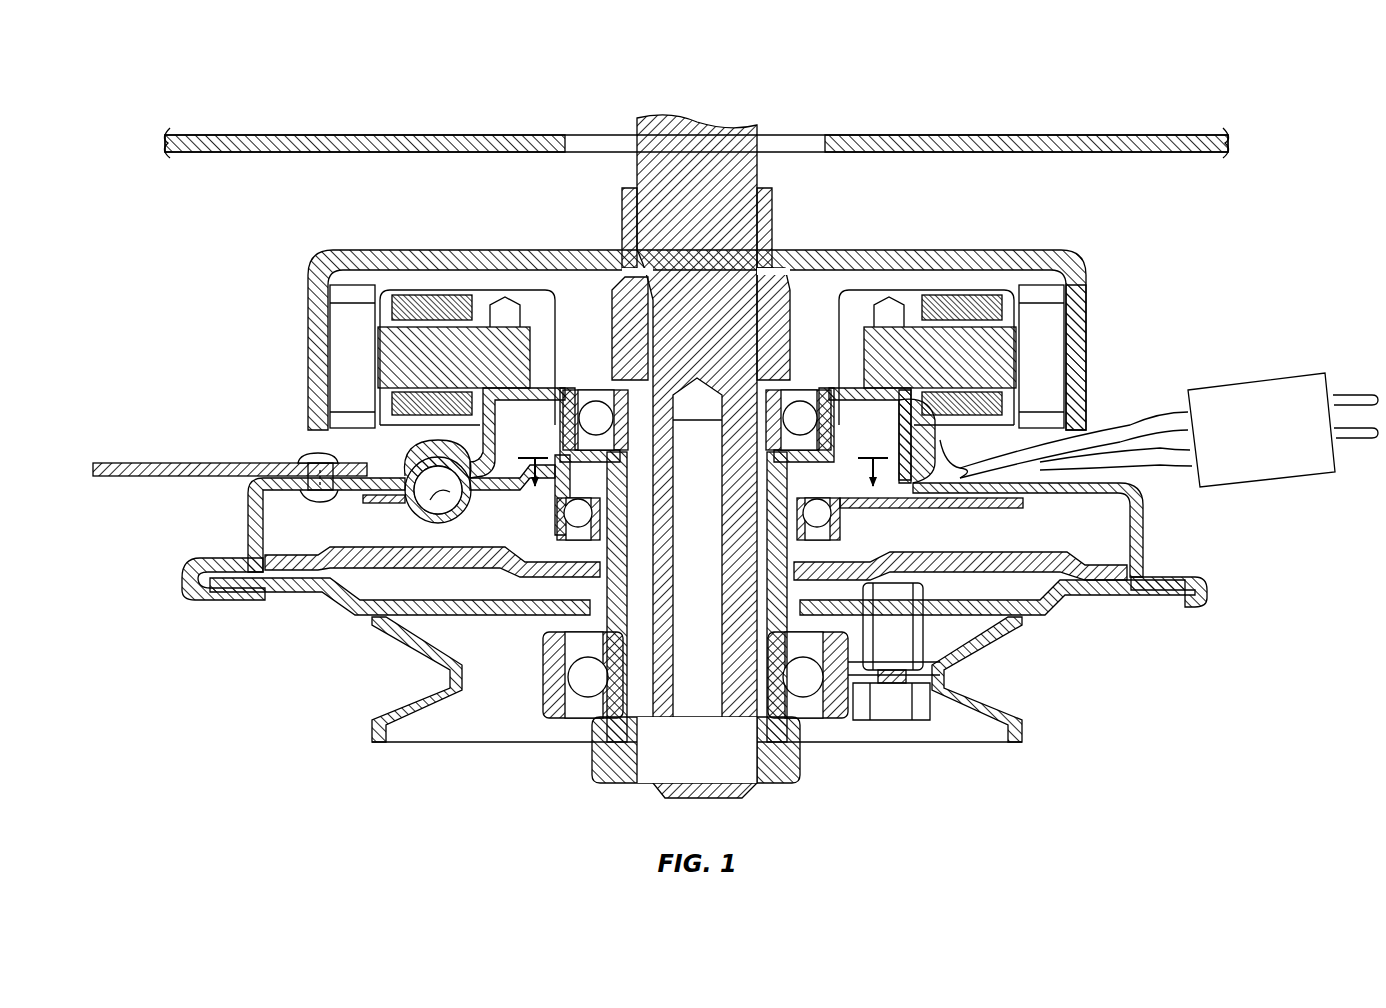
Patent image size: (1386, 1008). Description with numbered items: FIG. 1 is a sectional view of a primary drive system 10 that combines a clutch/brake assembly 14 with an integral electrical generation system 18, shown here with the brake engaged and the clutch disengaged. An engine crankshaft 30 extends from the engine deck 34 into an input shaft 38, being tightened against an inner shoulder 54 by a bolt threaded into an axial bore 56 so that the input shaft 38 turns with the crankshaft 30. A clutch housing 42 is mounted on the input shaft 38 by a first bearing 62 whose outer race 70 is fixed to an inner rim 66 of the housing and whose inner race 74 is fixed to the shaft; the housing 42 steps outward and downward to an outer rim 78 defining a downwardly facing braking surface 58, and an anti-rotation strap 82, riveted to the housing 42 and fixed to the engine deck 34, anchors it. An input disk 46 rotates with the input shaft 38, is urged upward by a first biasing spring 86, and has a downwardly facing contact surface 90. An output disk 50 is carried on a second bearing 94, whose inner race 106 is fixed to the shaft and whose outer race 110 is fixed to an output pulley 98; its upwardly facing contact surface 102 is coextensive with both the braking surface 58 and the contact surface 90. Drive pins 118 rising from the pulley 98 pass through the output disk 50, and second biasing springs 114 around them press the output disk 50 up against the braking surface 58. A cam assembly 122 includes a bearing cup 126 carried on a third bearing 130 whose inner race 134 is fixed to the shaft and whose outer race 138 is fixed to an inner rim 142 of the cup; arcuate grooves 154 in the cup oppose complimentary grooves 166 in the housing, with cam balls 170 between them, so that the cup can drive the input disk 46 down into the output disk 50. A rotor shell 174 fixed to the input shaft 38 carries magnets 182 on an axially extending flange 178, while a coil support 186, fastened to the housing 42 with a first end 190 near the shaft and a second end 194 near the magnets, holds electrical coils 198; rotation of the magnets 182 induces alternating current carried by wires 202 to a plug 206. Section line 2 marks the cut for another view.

The primary drive system 10 is at (1308, 220).
The clutch/brake assembly 14 is at (283, 745).
The electrical generation system 18 is at (243, 228).
The engine crankshaft 30 is at (735, 135).
The engine deck 34 is at (432, 135).
The input shaft 38 is at (772, 215).
The clutch housing 42 is at (704, 498).
The input disk 46 is at (370, 575).
The output disk 50 is at (345, 605).
The inner shoulder 54 is at (790, 400).
The axial bore 56 is at (725, 790).
The braking surface 58 is at (210, 566).
The first bearing 62 is at (822, 395).
The inner rim 66 is at (870, 400).
The outer race 70 is at (895, 405).
The inner race 74 is at (782, 390).
The outer rim 78 is at (1150, 545).
The anti-rotation strap 82 is at (205, 462).
The first biasing spring 86 is at (535, 712).
The contact surface 90 is at (252, 505).
The second bearing 94 is at (815, 722).
The output pulley 98 is at (405, 675).
The contact surface 102 is at (255, 600).
The inner race 106 is at (810, 735).
The outer race 110 is at (880, 722).
The second biasing springs 114 is at (925, 680).
The drive pins 118 is at (925, 640).
The cam assembly 122 is at (400, 470).
The bearing cup 126 is at (385, 518).
The third bearing 130 is at (1143, 512).
The inner race 134 is at (730, 570).
The outer race 138 is at (1105, 488).
The inner rim 142 is at (915, 410).
The arcuate grooves 154 is at (455, 508).
The complimentary grooves 166 is at (430, 450).
The cam balls 170 is at (410, 508).
The rotor shell 174 is at (425, 248).
The axially extending flange 178 is at (1078, 332).
The magnets 182 is at (1045, 372).
The coil support 186 is at (461, 366).
The first end 190 is at (530, 340).
The second end 194 is at (375, 350).
The electrical coils 198 is at (440, 300).
The wires 202 is at (1120, 430).
The plug 206 is at (1245, 388).
The section line 2 is at (701, 476).